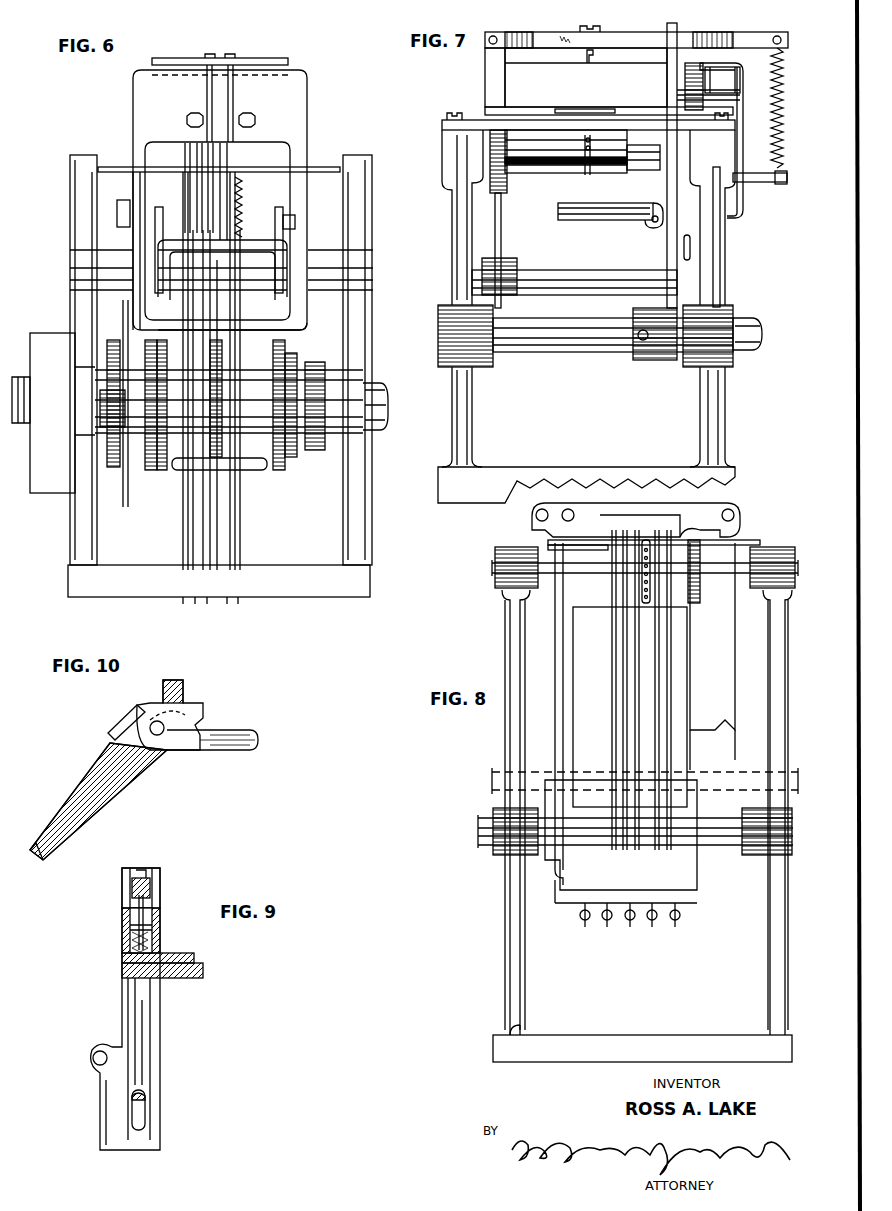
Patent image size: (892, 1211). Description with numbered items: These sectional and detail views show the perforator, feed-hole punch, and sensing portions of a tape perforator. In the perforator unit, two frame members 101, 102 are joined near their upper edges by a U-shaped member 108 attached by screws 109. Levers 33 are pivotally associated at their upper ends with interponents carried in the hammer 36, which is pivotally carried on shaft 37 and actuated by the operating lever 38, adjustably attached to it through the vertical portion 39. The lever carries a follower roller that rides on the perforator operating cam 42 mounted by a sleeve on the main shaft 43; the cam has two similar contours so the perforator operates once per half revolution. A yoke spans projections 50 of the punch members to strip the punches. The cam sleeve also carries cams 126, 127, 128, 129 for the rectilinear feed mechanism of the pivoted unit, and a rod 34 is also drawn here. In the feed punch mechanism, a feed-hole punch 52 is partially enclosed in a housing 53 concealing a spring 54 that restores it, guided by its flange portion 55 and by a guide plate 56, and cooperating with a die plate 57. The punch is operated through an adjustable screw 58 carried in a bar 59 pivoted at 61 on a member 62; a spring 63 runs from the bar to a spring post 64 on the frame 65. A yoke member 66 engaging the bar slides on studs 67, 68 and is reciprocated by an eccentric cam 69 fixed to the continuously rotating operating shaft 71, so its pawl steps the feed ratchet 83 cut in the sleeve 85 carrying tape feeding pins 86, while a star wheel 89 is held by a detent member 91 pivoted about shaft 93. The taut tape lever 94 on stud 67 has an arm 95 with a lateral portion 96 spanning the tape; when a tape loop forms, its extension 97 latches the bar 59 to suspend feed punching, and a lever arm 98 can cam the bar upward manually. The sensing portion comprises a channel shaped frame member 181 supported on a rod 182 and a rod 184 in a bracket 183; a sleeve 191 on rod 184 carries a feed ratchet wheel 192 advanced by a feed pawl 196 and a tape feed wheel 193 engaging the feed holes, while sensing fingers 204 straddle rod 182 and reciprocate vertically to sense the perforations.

In FIG. 6, the levers 33 is at (187, 538).
In FIG. 6, the rod 34 is at (250, 468).
In FIG. 6, the hammer 36 is at (303, 328).
In FIG. 6, the pivot shaft 37 is at (260, 270).
In FIG. 6, the operating lever 38 is at (127, 332).
In FIG. 6, the vertical portion 39 is at (137, 163).
In FIG. 6, the perforator operating cam 42 is at (112, 468).
In FIG. 6, the main shaft 43 is at (100, 425).
In FIG. 6, the projections 50 is at (205, 210).
In FIG. 7, the feed-hole punch 52 is at (595, 58).
In FIG. 9, the feed-hole punch 52 is at (143, 913).
In FIG. 9, the housing 53 is at (123, 953).
In FIG. 9, the spring 54 is at (123, 940).
In FIG. 9, the flange portion 55 is at (157, 922).
In FIG. 9, the guide plate 56 is at (194, 957).
In FIG. 9, the die plate 57 is at (203, 967).
In FIG. 7, the adjustable screw 58 is at (600, 30).
In FIG. 9, the adjustable screw 58 is at (150, 870).
In FIG. 7, the bar 59 is at (530, 35).
In FIG. 9, the bar 59 is at (150, 887).
In FIG. 7, the pivot 61 is at (497, 36).
In FIG. 7, the member 62 is at (495, 75).
In FIG. 7, the spring 63 is at (768, 108).
In FIG. 7, the spring post 64 is at (757, 183).
In FIG. 7, the frame 65 is at (710, 240).
In FIG. 7, the yoke member 66 is at (667, 240).
In FIG. 9, the yoke member 66 is at (150, 1013).
In FIG. 7, the stud 67 is at (680, 85).
In FIG. 7, the stud 68 is at (687, 240).
In FIG. 9, the stud 68 is at (138, 1093).
In FIG. 7, the eccentric cam 69 is at (670, 358).
In FIG. 7, the operating shaft 71 is at (560, 343).
In FIG. 7, the feed ratchet 83 is at (638, 163).
In FIG. 7, the sleeve 85 is at (555, 153).
In FIG. 7, the tape feeding pins 86 is at (588, 167).
In FIG. 7, the star wheel 89 is at (505, 172).
In FIG. 7, the detent member 91 is at (501, 230).
In FIG. 7, the shaft 93 is at (583, 275).
In FIG. 7, the taut tape lever 94 is at (723, 60).
In FIG. 10, the taut tape lever 94 is at (120, 712).
In FIG. 7, the arm 95 is at (745, 203).
In FIG. 10, the arm 95 is at (95, 770).
In FIG. 7, the lateral portion 96 is at (575, 220).
In FIG. 10, the lateral portion 96 is at (37, 853).
In FIG. 7, the extension 97 is at (698, 38).
In FIG. 10, the extension 97 is at (188, 700).
In FIG. 7, the lever arm 98 is at (690, 98).
In FIG. 10, the lever arm 98 is at (220, 733).
In FIG. 6, the frame member 101 is at (143, 92).
In FIG. 6, the frame member 102 is at (310, 85).
In FIG. 6, the U-shaped member 108 is at (222, 87).
In FIG. 6, the screws 109 is at (187, 120).
In FIG. 6, the cam 126 is at (152, 470).
In FIG. 6, the cam 127 is at (162, 470).
In FIG. 6, the cam 128 is at (278, 470).
In FIG. 6, the cam 129 is at (290, 457).
In FIG. 8, the channel shaped frame member 181 is at (567, 660).
In FIG. 8, the rod 182 is at (475, 842).
In FIG. 6, the bracket 183 is at (80, 533).
In FIG. 8, the bracket 183 is at (508, 922).
In FIG. 8, the rod 184 is at (495, 570).
In FIG. 8, the sleeve 191 is at (698, 590).
In FIG. 8, the feed ratchet wheel 192 is at (707, 542).
In FIG. 8, the tape feed wheel 193 is at (642, 590).
In FIG. 8, the feed pawl 196 is at (713, 632).
In FIG. 8, the sensing fingers 204 is at (663, 730).